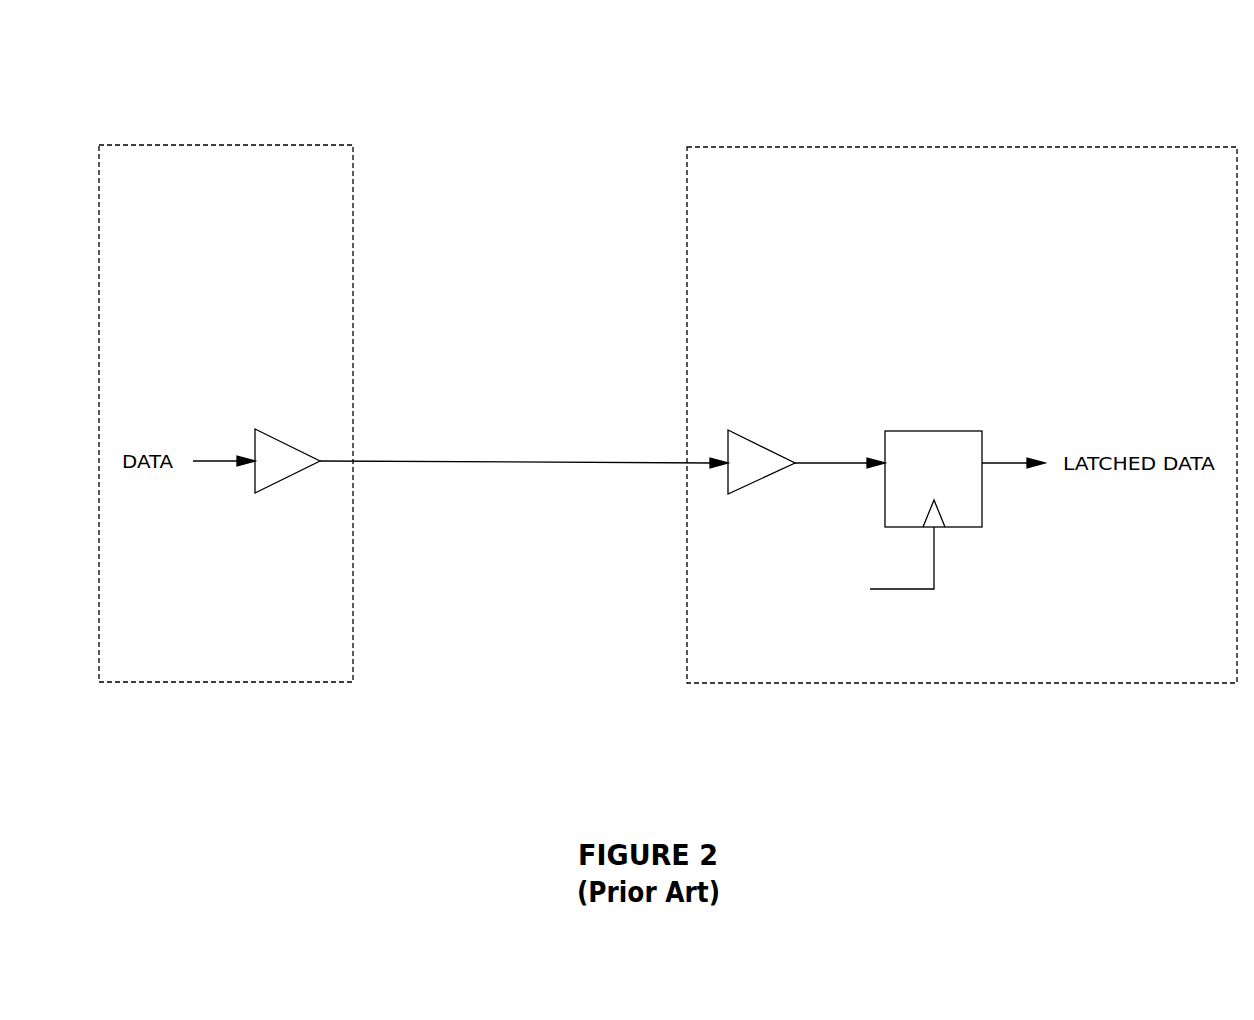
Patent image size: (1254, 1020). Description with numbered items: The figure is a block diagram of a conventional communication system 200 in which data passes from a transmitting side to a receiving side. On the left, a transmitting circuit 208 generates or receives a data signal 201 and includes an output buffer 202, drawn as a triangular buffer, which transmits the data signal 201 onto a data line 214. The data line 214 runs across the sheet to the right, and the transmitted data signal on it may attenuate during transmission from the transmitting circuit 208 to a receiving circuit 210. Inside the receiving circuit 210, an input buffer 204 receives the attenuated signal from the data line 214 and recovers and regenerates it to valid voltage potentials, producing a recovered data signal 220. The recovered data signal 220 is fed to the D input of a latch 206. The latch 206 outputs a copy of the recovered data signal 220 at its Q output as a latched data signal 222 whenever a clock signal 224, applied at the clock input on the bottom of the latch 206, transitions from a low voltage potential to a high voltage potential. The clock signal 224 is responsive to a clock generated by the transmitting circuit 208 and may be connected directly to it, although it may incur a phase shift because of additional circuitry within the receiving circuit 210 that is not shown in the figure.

The communication system 200 is at (1150, 73).
The data signal 201 is at (210, 460).
The output buffer 202 is at (288, 446).
The input buffer 204 is at (770, 440).
The latch 206 is at (967, 431).
The transmitting circuit 208 is at (318, 145).
The receiving circuit 210 is at (757, 147).
The data line 214 is at (540, 461).
The recovered data signal 220 is at (838, 460).
The latched data signal 222 is at (1012, 462).
The clock signal 224 is at (957, 550).